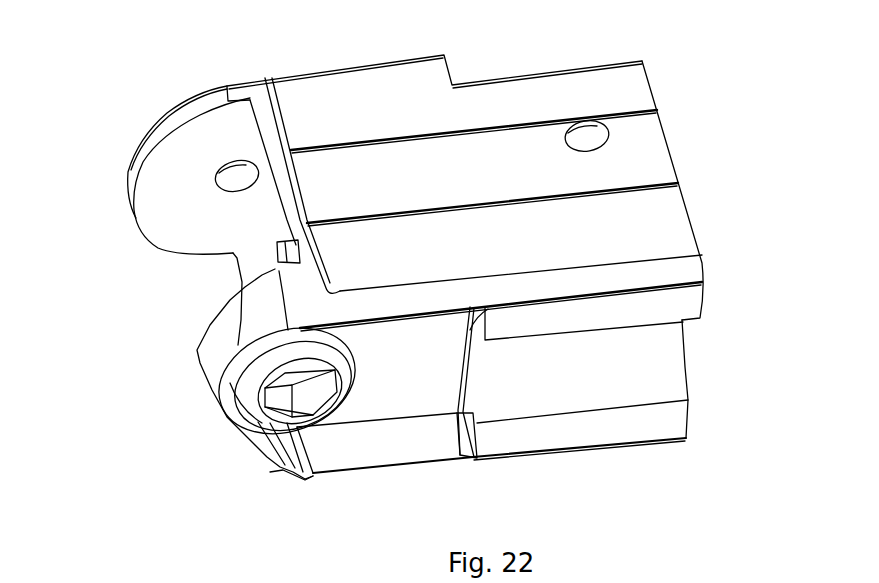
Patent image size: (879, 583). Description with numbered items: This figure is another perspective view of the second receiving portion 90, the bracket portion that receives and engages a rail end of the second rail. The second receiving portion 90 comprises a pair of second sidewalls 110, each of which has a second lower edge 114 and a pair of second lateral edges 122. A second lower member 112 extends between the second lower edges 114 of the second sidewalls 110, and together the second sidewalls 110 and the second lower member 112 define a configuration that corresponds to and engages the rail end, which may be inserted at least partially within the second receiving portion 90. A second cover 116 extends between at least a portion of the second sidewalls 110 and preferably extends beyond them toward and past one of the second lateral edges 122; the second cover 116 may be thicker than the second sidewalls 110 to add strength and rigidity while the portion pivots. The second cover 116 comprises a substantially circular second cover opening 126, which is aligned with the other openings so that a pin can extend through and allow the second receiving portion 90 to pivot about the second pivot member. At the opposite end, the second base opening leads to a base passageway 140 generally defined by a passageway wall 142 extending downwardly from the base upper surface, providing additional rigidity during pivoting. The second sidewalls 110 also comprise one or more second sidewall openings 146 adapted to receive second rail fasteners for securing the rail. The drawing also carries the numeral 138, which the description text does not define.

The second receiving portion 90 is at (723, 72).
The second sidewalls 110 is at (645, 225).
The second lower member 112 is at (655, 338).
The second lower edge 114 is at (407, 282).
The second cover 116 is at (175, 125).
The second lateral edges 122 is at (282, 117).
The second cover opening 126 is at (230, 177).
The curved arm 138 is at (210, 360).
The base passageway 140 is at (303, 388).
The passageway wall 142 is at (343, 362).
The second sidewall openings 146 is at (583, 137).